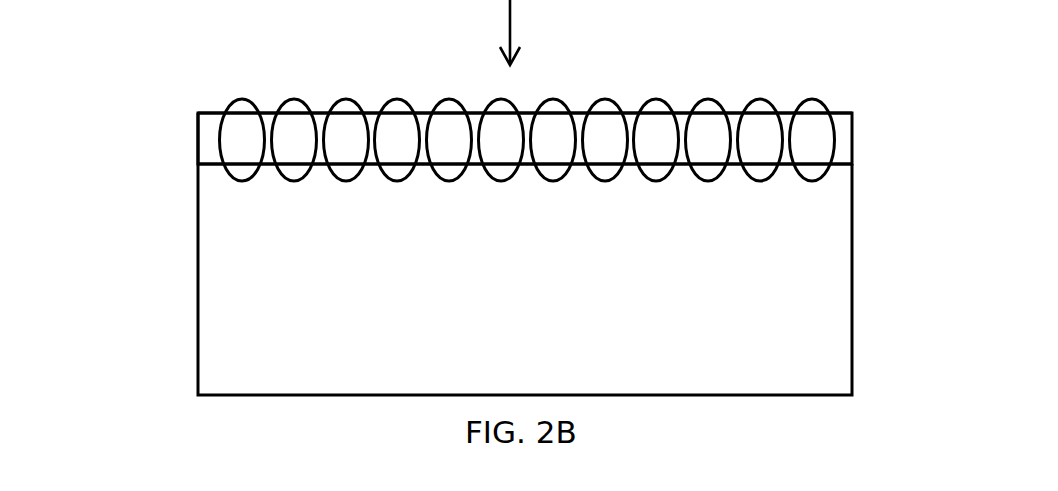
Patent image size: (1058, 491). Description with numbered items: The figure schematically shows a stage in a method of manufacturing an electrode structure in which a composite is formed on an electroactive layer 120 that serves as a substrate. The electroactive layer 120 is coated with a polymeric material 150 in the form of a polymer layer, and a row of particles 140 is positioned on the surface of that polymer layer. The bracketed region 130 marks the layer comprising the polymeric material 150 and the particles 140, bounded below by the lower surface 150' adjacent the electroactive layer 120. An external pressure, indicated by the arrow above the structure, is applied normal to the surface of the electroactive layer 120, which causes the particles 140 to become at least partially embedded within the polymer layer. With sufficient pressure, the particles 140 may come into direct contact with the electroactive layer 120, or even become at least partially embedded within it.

The electroactive layer 120 is at (499, 300).
The layer 130 is at (868, 103).
The particles 140 is at (242, 118).
The polymeric material 150 is at (134, 137).
The lower surface of matrix 150' is at (576, 205).